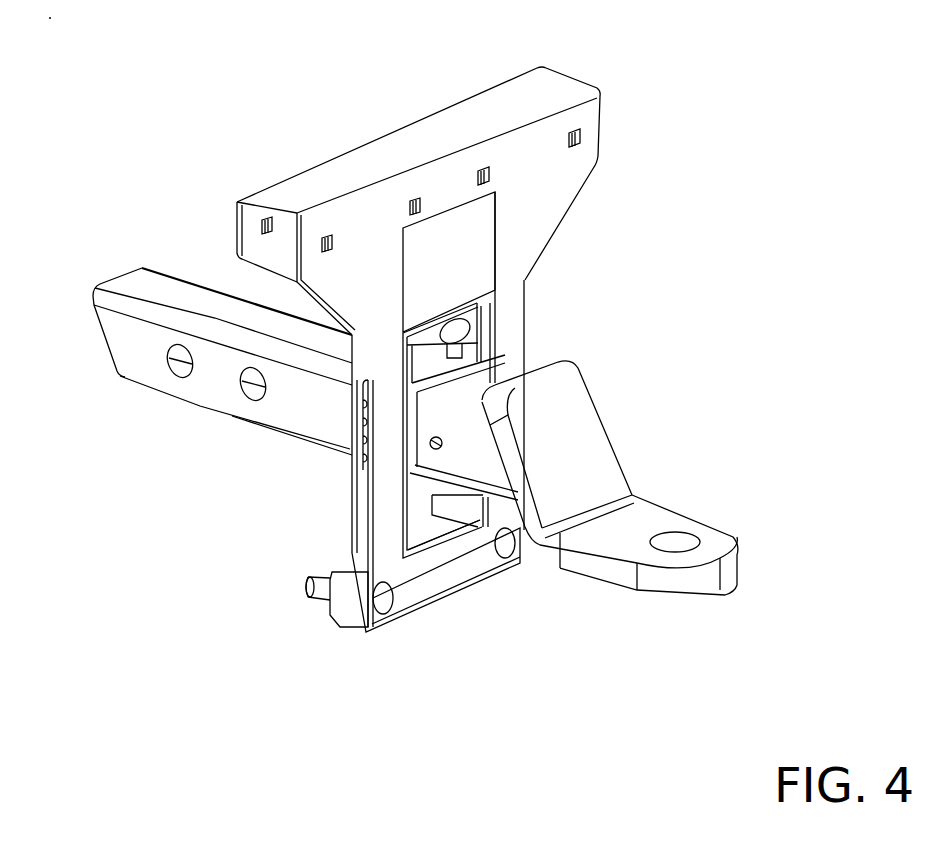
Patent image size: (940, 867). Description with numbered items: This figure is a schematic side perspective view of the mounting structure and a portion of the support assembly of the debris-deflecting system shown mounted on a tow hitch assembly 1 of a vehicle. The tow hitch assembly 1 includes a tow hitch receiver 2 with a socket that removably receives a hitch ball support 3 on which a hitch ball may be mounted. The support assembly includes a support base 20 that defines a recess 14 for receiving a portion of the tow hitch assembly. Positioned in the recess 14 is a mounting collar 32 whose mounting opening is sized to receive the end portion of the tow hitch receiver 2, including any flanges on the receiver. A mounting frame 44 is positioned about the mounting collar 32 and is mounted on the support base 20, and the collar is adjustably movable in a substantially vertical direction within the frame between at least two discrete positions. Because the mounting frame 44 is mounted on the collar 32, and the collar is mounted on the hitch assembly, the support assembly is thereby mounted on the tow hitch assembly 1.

The tow hitch assembly 1 is at (828, 382).
The tow hitch receiver 2 is at (232, 417).
The hitch ball support 3 is at (605, 430).
The recess 14 is at (442, 532).
The support base 20 is at (583, 80).
The mounting collar 32 is at (440, 365).
The mounting frame 44 is at (353, 530).